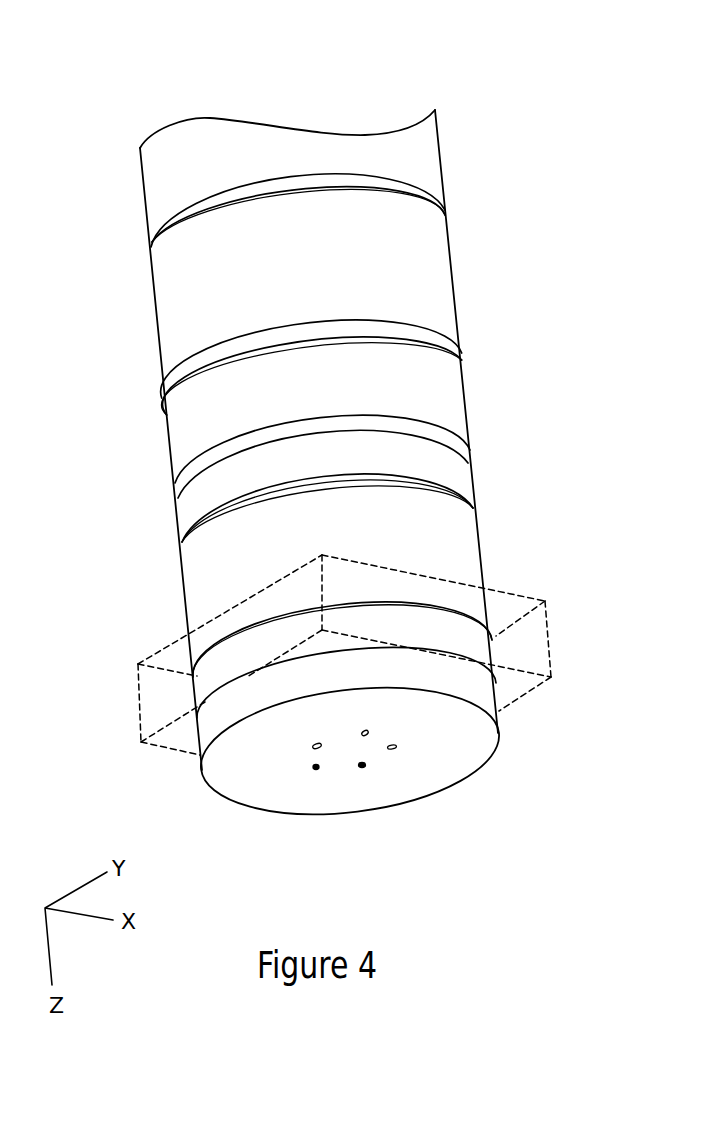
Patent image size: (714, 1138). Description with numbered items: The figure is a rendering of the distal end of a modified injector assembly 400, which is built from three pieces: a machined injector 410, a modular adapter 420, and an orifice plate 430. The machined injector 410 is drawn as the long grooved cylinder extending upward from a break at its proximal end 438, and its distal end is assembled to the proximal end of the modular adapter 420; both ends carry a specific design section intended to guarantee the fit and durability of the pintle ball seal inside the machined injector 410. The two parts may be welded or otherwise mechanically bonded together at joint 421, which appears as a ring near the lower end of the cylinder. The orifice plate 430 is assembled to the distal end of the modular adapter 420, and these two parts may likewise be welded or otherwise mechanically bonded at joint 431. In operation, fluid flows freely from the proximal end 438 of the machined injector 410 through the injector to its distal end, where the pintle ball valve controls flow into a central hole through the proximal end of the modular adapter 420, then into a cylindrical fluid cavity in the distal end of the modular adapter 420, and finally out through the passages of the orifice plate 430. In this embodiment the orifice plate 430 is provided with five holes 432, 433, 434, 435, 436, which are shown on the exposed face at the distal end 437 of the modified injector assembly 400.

The modified injector assembly 400 is at (567, 187).
The machined injector 410 is at (80, 178).
The modular adapter 420 is at (198, 699).
The joint 421 is at (500, 642).
The orifice plate 430 is at (233, 785).
The joint 431 is at (502, 686).
The hole 432 is at (315, 749).
The hole 433 is at (315, 769).
The hole 434 is at (360, 767).
The hole 435 is at (396, 748).
The hole 436 is at (368, 732).
The distal end 437 is at (428, 803).
The proximal end 438 is at (312, 113).